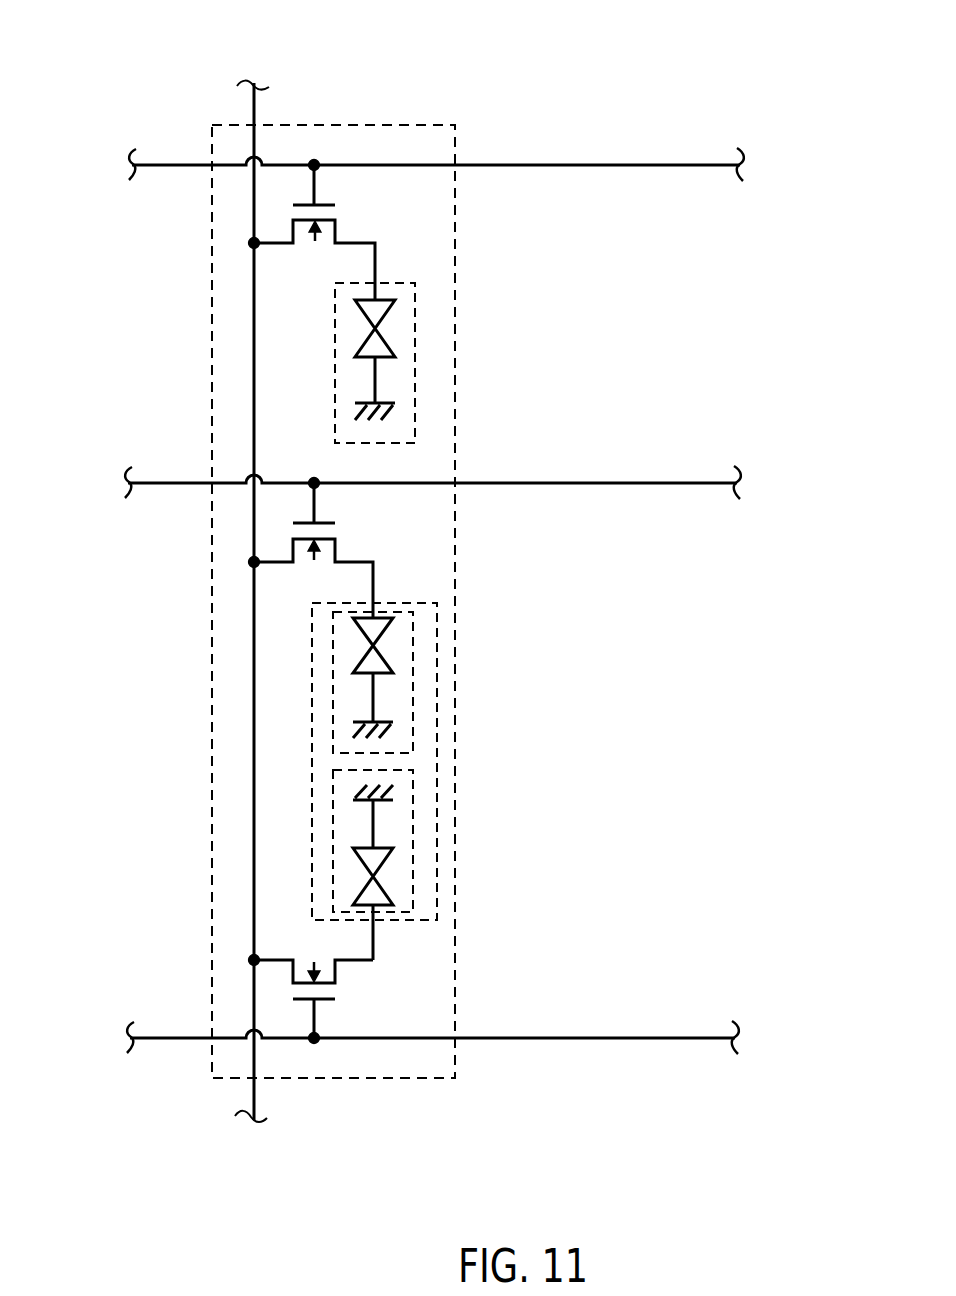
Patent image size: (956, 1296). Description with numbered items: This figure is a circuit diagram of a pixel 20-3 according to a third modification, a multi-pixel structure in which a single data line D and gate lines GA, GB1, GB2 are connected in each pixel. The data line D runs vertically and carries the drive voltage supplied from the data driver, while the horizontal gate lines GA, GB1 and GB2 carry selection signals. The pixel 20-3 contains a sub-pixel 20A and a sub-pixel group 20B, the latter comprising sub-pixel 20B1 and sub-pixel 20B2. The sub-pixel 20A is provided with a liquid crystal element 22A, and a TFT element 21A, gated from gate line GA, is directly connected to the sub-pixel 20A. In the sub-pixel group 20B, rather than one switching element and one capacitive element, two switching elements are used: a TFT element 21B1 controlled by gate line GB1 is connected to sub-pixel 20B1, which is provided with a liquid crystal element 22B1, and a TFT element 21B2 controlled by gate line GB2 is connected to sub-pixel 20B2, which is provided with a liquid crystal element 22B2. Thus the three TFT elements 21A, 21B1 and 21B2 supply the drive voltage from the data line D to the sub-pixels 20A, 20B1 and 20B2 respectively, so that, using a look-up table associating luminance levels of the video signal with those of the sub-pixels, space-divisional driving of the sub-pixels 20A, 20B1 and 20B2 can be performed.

The data line D is at (252, 112).
The pixel 20-3 is at (373, 124).
The gate line GA is at (712, 165).
The gate line GB1 is at (710, 483).
The gate line GB2 is at (707, 1038).
The TFT element 21A is at (272, 220).
The liquid crystal element 22A is at (353, 333).
The sub-pixel 20A is at (333, 388).
The TFT element 21B1 is at (272, 538).
The liquid crystal element 22B1 is at (353, 650).
The sub-pixel 20B1 is at (333, 707).
The sub-pixel group 20B is at (312, 767).
The sub-pixel 20B2 is at (333, 838).
The liquid crystal element 22B2 is at (352, 875).
The TFT element 21B2 is at (270, 985).